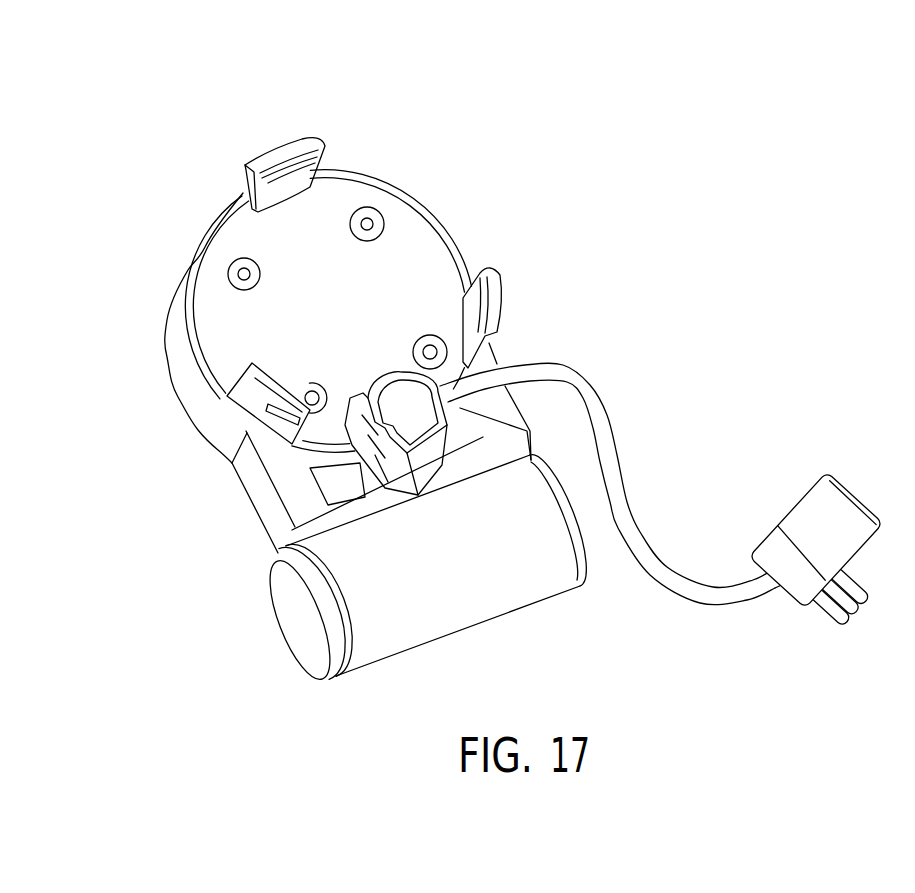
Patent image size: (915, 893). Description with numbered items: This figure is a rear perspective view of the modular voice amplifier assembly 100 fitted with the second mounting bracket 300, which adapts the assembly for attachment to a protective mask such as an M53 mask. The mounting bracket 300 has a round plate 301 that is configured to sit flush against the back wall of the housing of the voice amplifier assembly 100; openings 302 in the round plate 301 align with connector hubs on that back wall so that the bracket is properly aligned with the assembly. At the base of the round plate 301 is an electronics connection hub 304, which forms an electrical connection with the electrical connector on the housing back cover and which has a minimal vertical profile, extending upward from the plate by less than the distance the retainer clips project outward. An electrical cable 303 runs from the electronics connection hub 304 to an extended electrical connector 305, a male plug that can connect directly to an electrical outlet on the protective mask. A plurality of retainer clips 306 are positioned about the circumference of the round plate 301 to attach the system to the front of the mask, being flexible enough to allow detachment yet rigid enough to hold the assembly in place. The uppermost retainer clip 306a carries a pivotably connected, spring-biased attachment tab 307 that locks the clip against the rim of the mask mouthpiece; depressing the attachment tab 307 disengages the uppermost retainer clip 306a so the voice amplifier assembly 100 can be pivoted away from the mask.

The voice amplifier assembly 100 is at (205, 427).
The second mounting bracket 300 is at (403, 189).
The round plate 301 is at (413, 230).
The openings 302 is at (369, 231).
The electrical cable 303 is at (591, 400).
The electronics connection hub 304 is at (407, 397).
The extended electrical connector 305 is at (813, 513).
The retainer clips 306 is at (497, 283).
The uppermost retainer clip 306a is at (318, 148).
The attachment tab 307 is at (275, 150).